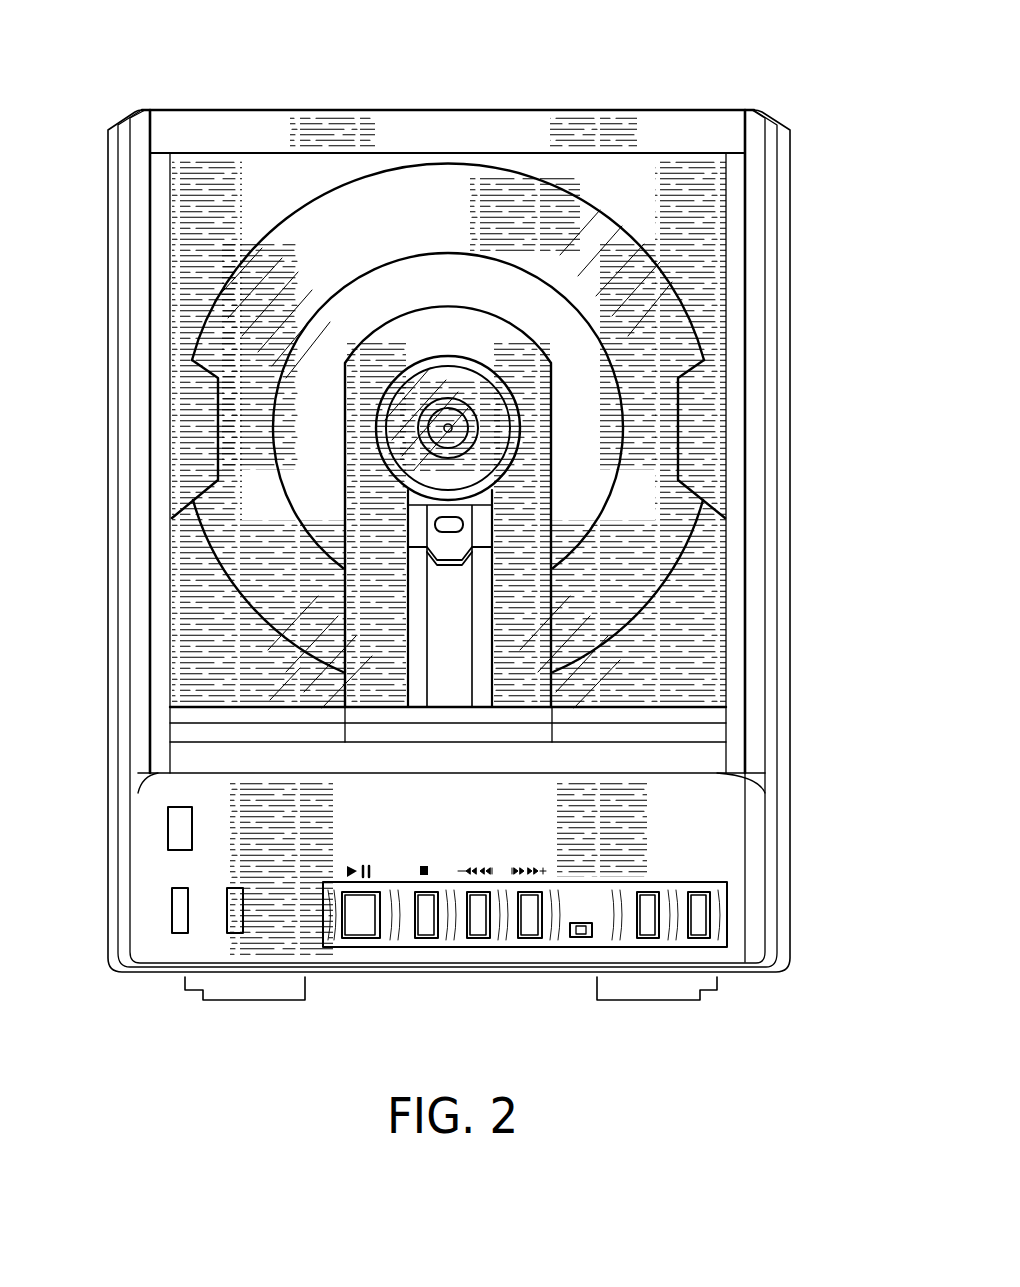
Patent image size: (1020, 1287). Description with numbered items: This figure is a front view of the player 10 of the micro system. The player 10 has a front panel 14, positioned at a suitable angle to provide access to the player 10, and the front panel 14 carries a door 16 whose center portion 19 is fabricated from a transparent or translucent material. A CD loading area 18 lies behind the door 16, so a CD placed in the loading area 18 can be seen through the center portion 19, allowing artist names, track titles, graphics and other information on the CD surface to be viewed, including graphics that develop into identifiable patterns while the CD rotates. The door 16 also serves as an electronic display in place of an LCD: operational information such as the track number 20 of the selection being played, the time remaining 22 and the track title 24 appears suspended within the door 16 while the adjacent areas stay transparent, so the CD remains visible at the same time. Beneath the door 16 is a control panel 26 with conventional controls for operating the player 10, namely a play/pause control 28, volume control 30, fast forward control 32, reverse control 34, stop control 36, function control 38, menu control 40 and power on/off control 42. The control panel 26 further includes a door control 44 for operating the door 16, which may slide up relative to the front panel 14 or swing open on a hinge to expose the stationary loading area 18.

The player 10 is at (198, 82).
The front panel 14 is at (140, 230).
The door 16 is at (630, 162).
The CD loading area 18 is at (427, 187).
The center portion 19 is at (555, 167).
The track title 24 is at (207, 759).
The time remaining 22 is at (550, 757).
The track number 20 is at (660, 755).
The power on/off control 42 is at (180, 828).
The control panel 26 is at (157, 863).
The function control 38 is at (180, 912).
The door control 44 is at (233, 912).
The play/pause control 28 is at (360, 912).
The stop control 36 is at (423, 915).
The reverse control 34 is at (477, 915).
The fast forward control 32 is at (528, 915).
The menu control 40 is at (578, 937).
The volume control 30 is at (645, 918).